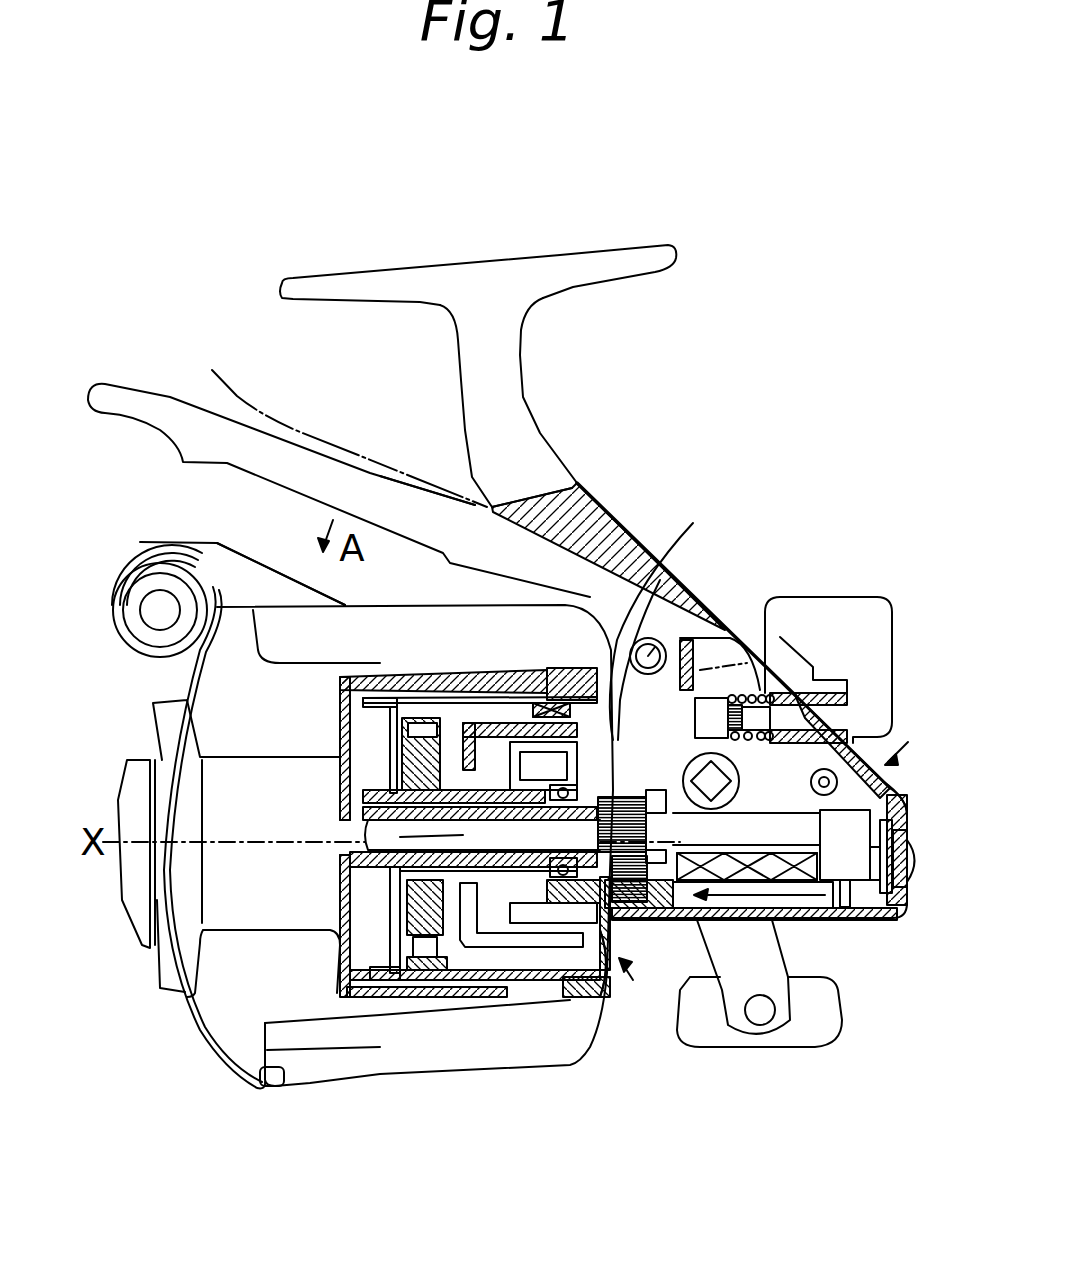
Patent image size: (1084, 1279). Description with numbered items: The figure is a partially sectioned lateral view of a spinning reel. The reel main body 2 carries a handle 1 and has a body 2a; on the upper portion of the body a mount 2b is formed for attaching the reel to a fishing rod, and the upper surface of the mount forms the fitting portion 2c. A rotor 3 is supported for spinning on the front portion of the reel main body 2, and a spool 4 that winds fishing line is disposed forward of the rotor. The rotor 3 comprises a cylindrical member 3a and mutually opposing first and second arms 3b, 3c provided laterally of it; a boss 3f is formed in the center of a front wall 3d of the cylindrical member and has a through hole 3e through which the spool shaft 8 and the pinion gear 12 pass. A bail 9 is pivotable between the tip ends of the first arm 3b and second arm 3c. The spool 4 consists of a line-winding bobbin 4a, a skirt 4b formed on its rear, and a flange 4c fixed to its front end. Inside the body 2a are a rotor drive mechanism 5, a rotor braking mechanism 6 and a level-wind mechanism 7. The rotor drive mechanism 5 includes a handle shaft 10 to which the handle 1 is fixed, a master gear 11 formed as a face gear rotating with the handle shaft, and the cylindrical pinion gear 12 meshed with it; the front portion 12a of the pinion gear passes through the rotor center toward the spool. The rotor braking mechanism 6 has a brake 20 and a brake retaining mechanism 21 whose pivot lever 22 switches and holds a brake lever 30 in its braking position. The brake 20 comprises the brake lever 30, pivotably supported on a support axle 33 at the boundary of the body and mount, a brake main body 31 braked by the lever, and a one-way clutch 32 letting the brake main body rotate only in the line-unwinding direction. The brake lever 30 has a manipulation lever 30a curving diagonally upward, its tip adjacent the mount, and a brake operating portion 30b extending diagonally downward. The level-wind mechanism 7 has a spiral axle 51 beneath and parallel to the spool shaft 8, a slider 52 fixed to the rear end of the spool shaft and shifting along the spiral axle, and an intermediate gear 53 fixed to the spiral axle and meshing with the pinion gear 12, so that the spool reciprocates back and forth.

The handle 1 is at (842, 1017).
The reel main body 2 is at (758, 701).
The body 2a is at (900, 792).
The mount 2b is at (521, 410).
The fitting portion 2c is at (568, 250).
The rotor 3 is at (437, 814).
The cylindrical member 3a is at (400, 717).
The first arm 3b is at (247, 553).
The second arm 3c is at (440, 1060).
The front wall 3d is at (395, 795).
The through hole 3e is at (375, 832).
The boss 3f is at (378, 798).
The spool 4 is at (268, 750).
The line-winding bobbin 4a is at (238, 768).
The skirt 4b is at (352, 690).
The flange 4c is at (190, 707).
The rotor drive mechanism 5 is at (622, 638).
The rotor braking mechanism 6 is at (515, 740).
The level-wind mechanism 7 is at (697, 907).
The spool shaft 8 is at (462, 836).
The bail 9 is at (160, 743).
The handle shaft 10 is at (745, 765).
The master gear 11 is at (750, 682).
The pinion gear 12 is at (605, 798).
The front portion 12a is at (395, 872).
The brake 20 is at (440, 680).
The brake retaining mechanism 21 is at (747, 682).
The pivot lever 22 is at (873, 617).
The brake lever 30 is at (373, 472).
The manipulation lever 30a is at (410, 512).
The brake operating portion 30b is at (557, 703).
The brake main body 31 is at (490, 720).
The one-way clutch 32 is at (400, 757).
The support axle 33 is at (652, 640).
The spiral axle 51 is at (800, 875).
The slider 52 is at (853, 880).
The intermediate gear 53 is at (645, 922).